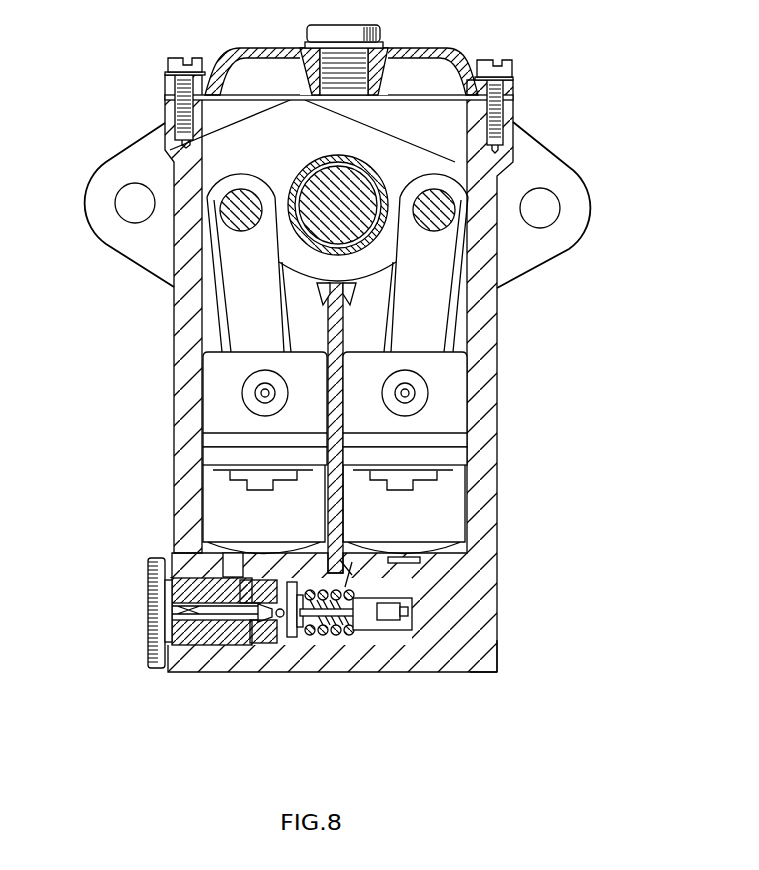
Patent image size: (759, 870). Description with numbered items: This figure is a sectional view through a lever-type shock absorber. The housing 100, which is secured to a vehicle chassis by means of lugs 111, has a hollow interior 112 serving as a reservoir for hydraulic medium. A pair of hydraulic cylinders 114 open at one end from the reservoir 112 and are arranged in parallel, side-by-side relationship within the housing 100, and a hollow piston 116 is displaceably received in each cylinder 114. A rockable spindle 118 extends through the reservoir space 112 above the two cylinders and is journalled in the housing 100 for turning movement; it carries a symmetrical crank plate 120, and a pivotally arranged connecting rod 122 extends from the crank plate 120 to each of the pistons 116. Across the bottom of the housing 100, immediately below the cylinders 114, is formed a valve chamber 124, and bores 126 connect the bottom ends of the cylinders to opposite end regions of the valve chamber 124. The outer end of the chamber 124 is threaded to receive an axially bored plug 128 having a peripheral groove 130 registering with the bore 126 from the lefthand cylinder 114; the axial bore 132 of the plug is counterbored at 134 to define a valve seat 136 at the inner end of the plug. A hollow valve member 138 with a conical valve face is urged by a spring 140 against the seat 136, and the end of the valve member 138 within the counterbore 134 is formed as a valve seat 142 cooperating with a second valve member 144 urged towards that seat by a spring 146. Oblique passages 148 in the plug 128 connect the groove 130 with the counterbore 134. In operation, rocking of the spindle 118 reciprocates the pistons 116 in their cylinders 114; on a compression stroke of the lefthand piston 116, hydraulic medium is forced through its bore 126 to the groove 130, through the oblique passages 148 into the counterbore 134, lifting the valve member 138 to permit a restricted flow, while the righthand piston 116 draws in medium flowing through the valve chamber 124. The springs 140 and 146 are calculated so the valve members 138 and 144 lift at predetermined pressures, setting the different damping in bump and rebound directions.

The housing 100 is at (197, 348).
The lugs 111 is at (100, 215).
The hollow interior 112 is at (437, 130).
The hydraulic cylinders 114 is at (222, 508).
The hollow piston 116 is at (408, 427).
The rockable spindle 118 is at (327, 190).
The symmetrical crank plate 120 is at (250, 168).
The connecting rod 122 is at (408, 325).
The valve chamber 124 is at (273, 636).
The bores 126 is at (232, 566).
The axially bored plug 128 is at (153, 638).
The peripheral groove 130 is at (242, 642).
The axial bore 132 is at (172, 613).
The counterbore 134 is at (253, 641).
The valve seat 136 is at (278, 580).
The hollow valve member 138 is at (348, 638).
The spring 140 is at (352, 632).
The valve seat 142 is at (300, 645).
The second valve member 144 is at (352, 562).
The spring 146 is at (487, 672).
The oblique passages 148 is at (215, 623).